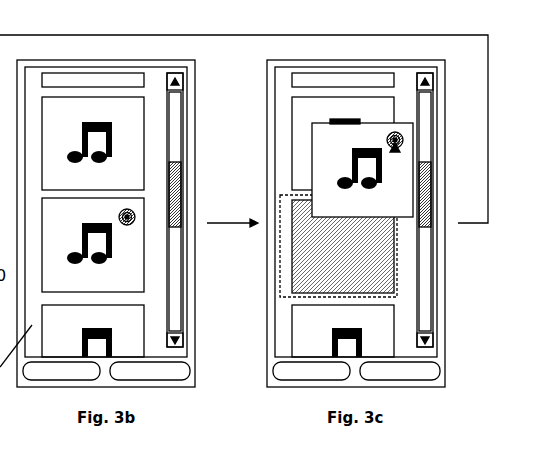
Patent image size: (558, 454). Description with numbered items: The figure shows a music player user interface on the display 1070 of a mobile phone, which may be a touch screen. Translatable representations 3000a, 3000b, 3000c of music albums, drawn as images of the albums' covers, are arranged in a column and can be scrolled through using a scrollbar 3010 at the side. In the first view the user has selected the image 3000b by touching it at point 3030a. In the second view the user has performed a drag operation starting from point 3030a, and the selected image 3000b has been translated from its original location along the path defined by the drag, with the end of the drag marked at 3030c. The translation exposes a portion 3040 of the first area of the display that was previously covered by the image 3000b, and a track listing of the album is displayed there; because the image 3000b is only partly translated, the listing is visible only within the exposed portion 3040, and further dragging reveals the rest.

In FIG. 3b, the translatable representation of music album 3000a is at (93, 143).
In FIG. 3b, the translatable representation of music album 3000b is at (93, 245).
In FIG. 3b, the translatable representation of music album 3000c is at (93, 331).
In FIG. 3b, the scrollbar 3010 is at (207, 210).
In FIG. 3c, the scrollbar 3010 is at (459, 210).
In FIG. 3b, the touch point 3030a is at (192, 249).
In FIG. 3c, the selection indicator on popup window 3030c is at (445, 111).
In FIG. 3c, the exposed portion of first area 3040 is at (389, 251).
In FIG. 3c, the display 1070 is at (277, 352).